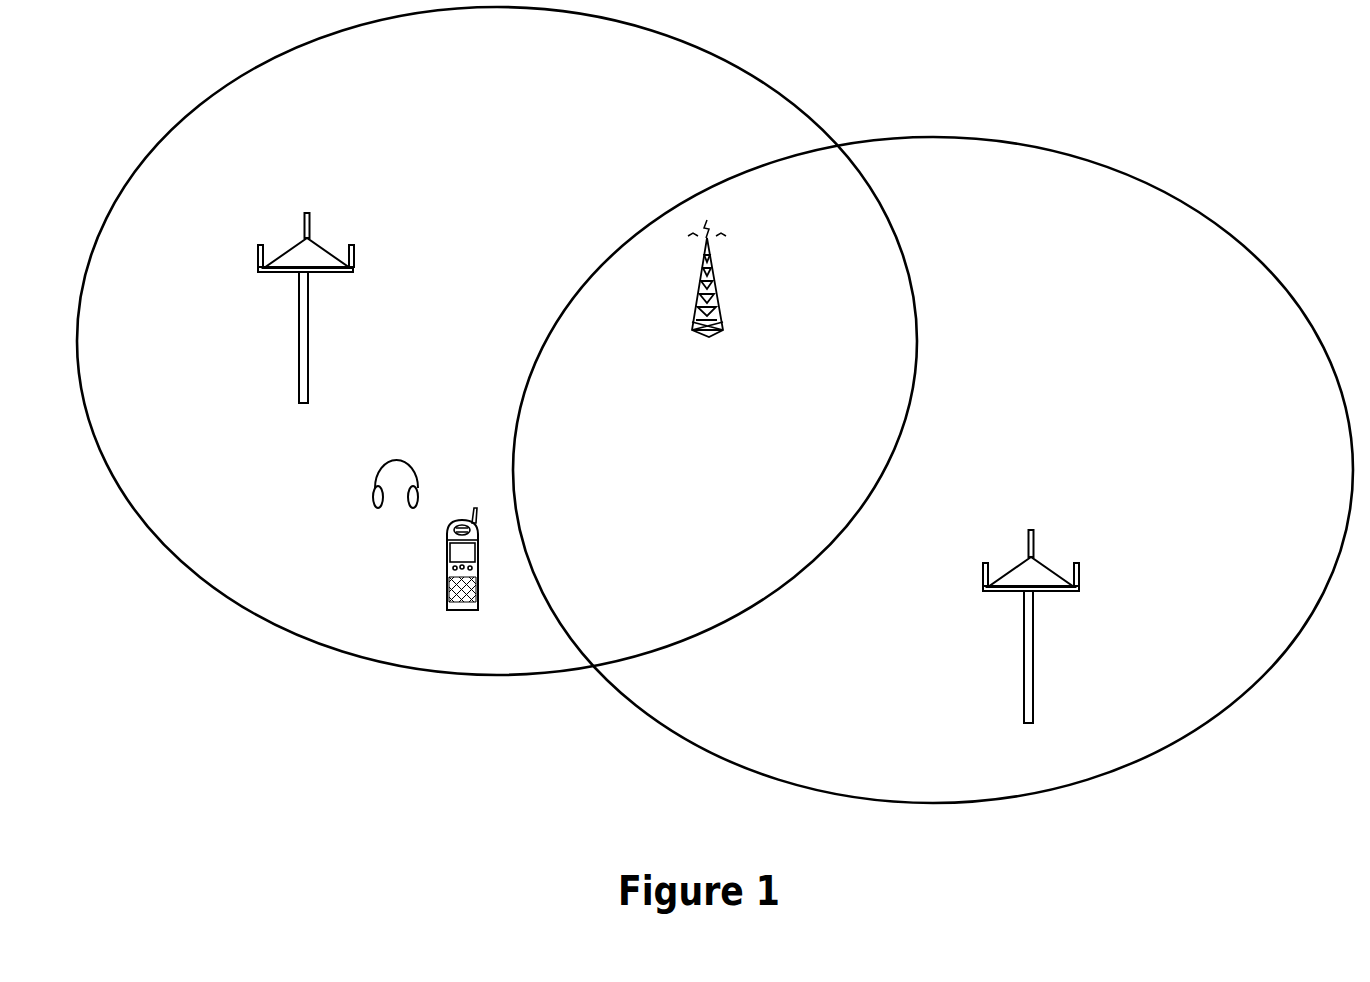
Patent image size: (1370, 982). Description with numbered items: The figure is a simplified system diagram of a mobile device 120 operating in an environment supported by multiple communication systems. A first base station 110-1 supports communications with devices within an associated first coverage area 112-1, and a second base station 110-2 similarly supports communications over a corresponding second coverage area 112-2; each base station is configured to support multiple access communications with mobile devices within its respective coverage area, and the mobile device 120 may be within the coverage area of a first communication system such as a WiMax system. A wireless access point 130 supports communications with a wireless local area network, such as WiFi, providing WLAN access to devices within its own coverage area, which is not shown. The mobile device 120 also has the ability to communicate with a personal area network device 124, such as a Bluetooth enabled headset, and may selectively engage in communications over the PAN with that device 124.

The first base station 110-1 is at (309, 397).
The second base station 110-2 is at (1034, 720).
The first coverage area 112-1 is at (297, 636).
The second coverage area 112-2 is at (1160, 748).
The mobile device 120 is at (483, 607).
The Personal Area Network (PAN) device 124 is at (427, 505).
The wireless access point 130 is at (728, 325).